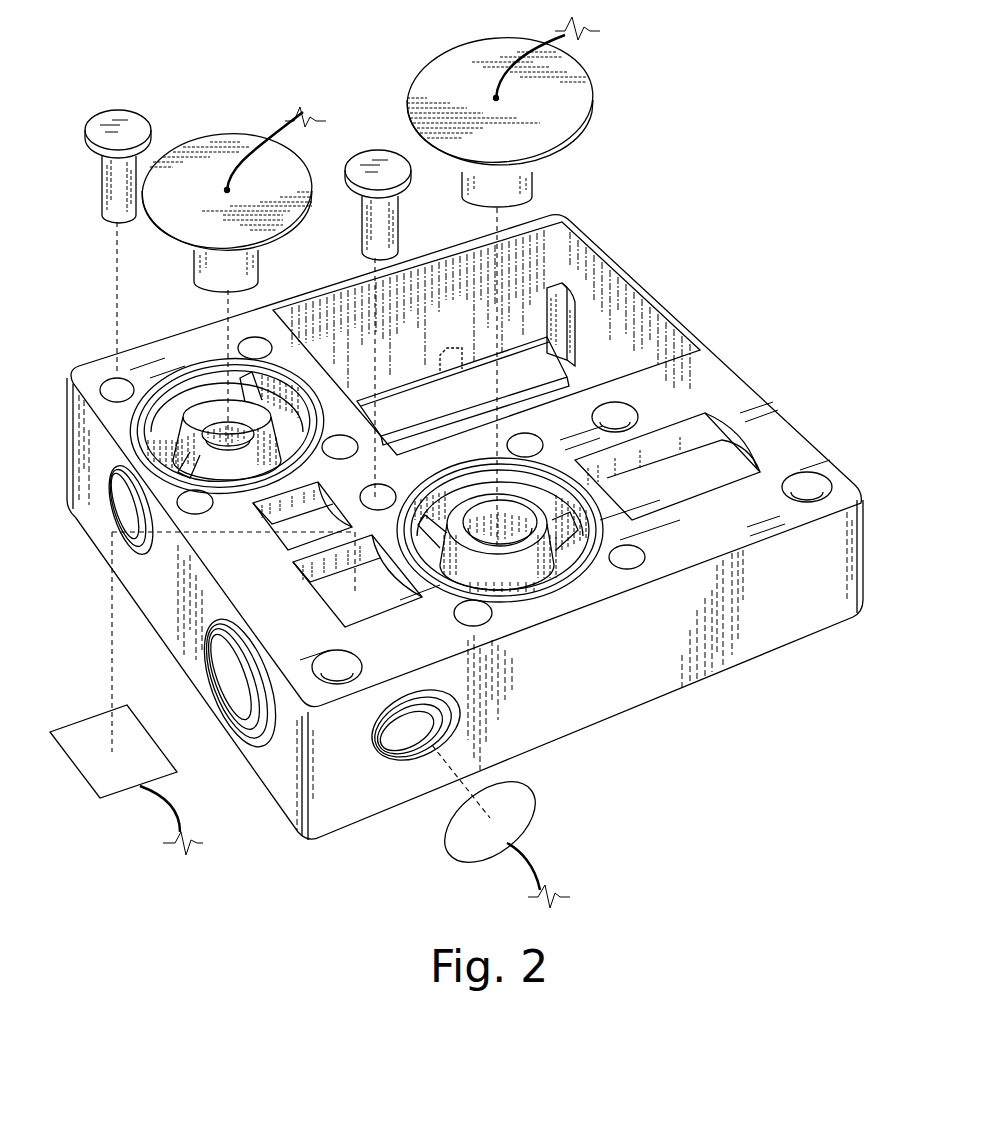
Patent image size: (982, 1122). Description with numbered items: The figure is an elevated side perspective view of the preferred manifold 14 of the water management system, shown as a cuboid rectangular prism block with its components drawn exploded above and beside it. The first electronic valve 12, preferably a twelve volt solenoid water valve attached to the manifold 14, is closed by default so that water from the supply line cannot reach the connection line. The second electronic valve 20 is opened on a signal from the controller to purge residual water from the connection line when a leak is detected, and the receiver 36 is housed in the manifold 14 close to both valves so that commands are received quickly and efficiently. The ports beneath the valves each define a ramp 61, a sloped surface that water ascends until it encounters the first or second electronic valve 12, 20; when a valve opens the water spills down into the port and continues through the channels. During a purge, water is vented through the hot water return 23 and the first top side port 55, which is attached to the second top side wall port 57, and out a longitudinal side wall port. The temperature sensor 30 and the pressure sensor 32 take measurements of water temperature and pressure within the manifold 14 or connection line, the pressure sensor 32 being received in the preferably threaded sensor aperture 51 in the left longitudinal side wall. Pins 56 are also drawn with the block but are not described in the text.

The manifold 14 is at (97, 58).
The first electronic valve 12 is at (578, 93).
The second electronic valve 20 is at (187, 243).
The locating pin 56 is at (145, 118).
The ramp 61 is at (200, 390).
The receiver 36 is at (452, 347).
The hot water return 23 is at (111, 517).
The second top side wall port 57 is at (128, 543).
The first top side port 55 is at (230, 677).
The sensor aperture 51 is at (378, 758).
The temperature sensor 30 is at (102, 780).
The pressure sensor 32 is at (457, 843).